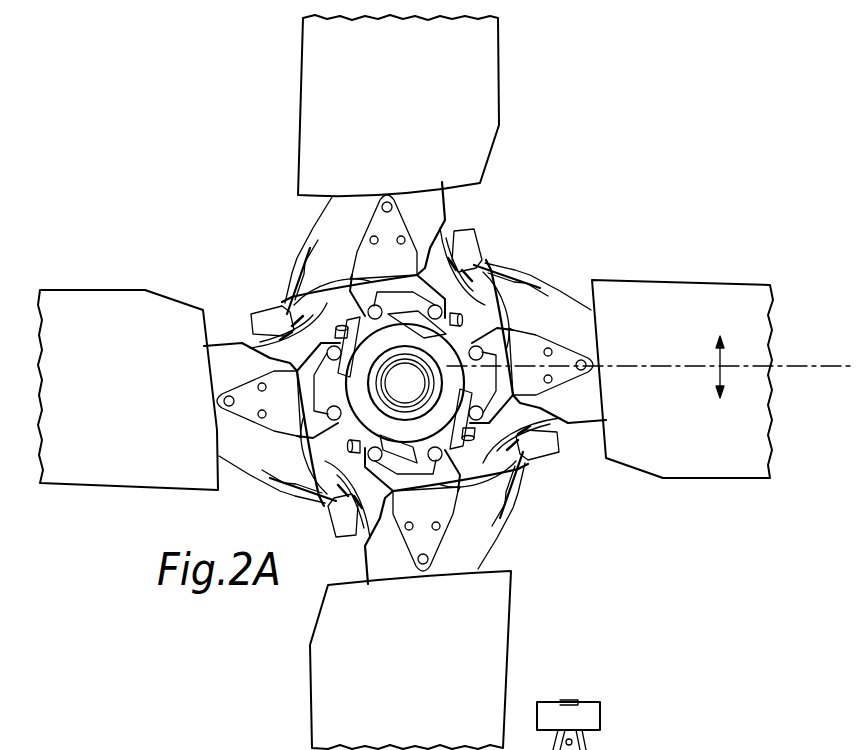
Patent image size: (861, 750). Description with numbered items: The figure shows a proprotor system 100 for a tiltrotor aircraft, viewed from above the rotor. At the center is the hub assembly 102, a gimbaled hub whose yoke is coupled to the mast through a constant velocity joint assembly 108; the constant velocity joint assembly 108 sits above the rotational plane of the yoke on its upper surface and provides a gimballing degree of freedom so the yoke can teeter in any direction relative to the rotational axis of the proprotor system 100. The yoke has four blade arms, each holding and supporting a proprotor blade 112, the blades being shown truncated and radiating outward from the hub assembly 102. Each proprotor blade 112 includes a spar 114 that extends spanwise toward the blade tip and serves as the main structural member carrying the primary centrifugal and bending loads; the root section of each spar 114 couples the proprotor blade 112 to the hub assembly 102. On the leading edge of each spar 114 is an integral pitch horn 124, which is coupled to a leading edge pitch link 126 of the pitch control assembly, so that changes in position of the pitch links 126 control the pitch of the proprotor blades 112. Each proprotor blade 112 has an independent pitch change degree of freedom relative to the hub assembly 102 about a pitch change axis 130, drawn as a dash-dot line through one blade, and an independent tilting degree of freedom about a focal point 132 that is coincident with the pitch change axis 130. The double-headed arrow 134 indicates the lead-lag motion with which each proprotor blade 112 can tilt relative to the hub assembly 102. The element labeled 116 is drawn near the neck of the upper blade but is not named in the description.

The proprotor system 100 is at (606, 198).
The hub assembly 102 is at (445, 238).
The constant velocity joint assembly 108 is at (470, 323).
The proprotor blade 112 is at (400, 104).
The spar 114 is at (325, 227).
The blade neck 116 is at (347, 206).
The integral pitch horn 124 is at (308, 262).
The leading edge pitch link 126 is at (256, 327).
The pitch change axis 130 is at (806, 358).
The focal point 132 is at (505, 371).
The arrow 134 is at (722, 359).